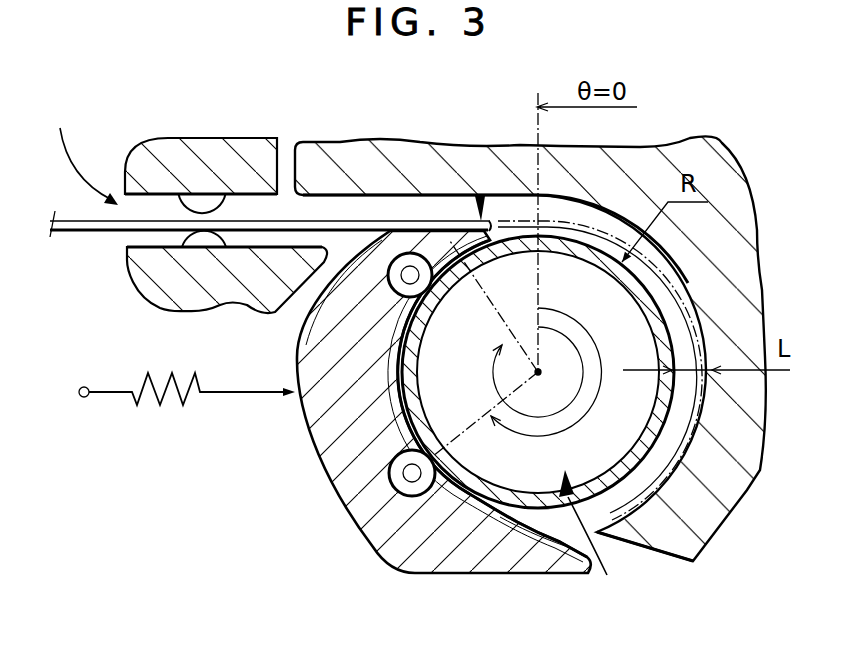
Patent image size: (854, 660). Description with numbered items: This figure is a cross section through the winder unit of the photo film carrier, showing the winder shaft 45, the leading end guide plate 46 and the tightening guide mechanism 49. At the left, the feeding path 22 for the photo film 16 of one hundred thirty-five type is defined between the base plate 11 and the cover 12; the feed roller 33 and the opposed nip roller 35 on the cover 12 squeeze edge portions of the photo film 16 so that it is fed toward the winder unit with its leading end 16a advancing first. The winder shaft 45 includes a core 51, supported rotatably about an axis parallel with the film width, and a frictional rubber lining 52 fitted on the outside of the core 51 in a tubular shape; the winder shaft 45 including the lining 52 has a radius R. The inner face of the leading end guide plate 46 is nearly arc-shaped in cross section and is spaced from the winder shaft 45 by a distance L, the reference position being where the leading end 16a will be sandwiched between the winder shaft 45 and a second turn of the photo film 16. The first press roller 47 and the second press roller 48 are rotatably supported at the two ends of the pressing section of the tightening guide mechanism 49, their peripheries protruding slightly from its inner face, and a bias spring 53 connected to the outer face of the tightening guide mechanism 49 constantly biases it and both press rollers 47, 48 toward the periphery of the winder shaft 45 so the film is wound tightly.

The base plate 11 is at (173, 285).
The cover 12 is at (245, 150).
The photo film 16 is at (78, 233).
The leading end 16a is at (480, 196).
The feeding path 22 is at (80, 154).
The feed roller 33 is at (204, 247).
The nip roller 35 is at (200, 202).
The winder shaft 45 is at (595, 539).
The leading end guide plate 46 is at (712, 515).
The first press roller 47 is at (395, 483).
The second press roller 48 is at (393, 282).
The tightening guide mechanism 49 is at (308, 450).
The core 51 is at (636, 437).
The frictional rubber lining 52 is at (528, 503).
The bias spring 53 is at (180, 403).